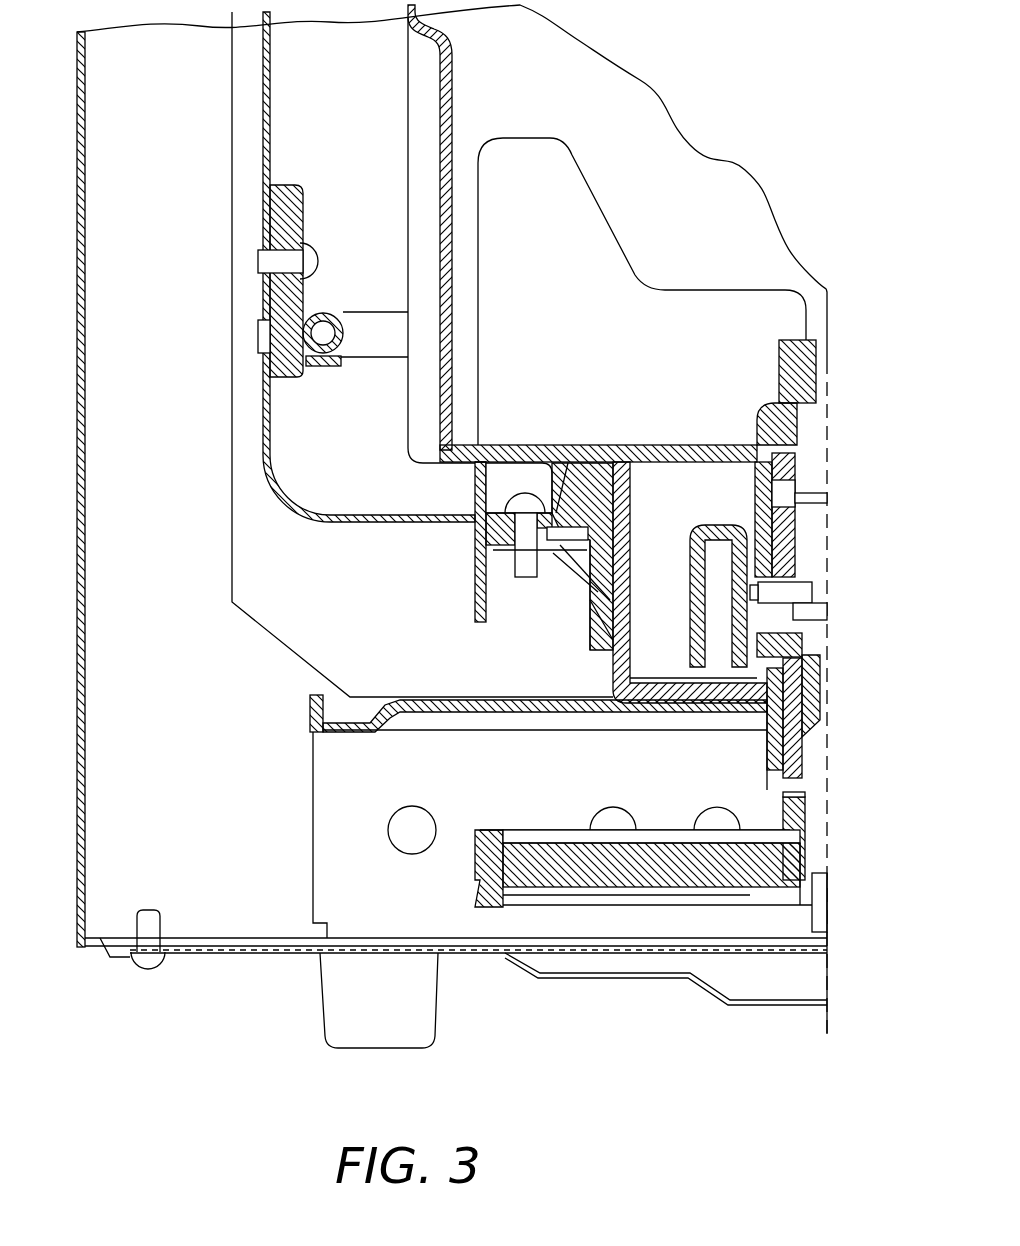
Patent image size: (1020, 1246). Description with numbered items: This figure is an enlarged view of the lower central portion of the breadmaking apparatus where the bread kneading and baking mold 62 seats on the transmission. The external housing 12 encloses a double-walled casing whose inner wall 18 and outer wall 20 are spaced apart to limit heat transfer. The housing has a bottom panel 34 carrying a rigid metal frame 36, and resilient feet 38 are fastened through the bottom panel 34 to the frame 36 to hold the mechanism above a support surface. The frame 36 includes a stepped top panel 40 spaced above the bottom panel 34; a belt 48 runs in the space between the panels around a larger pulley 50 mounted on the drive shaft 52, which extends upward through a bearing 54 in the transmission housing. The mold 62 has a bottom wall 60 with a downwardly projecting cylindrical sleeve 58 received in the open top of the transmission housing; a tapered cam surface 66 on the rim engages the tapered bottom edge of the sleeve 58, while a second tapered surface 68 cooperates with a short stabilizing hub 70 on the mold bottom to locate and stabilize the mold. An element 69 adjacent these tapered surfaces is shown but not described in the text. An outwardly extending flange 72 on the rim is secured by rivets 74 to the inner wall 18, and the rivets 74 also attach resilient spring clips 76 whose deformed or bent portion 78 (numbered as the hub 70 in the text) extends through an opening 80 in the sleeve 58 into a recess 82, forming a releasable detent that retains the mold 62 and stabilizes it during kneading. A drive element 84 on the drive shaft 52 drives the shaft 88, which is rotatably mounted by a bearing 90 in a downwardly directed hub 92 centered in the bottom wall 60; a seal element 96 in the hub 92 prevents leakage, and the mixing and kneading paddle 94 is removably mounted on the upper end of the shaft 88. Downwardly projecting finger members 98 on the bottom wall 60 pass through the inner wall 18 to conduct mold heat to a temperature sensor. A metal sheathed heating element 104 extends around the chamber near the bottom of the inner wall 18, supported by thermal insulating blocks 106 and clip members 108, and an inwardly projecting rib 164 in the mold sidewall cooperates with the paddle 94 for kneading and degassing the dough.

The external housing 12 is at (77, 332).
The inner wall 18 is at (263, 131).
The outer wall 20 is at (232, 217).
The bottom panel 34 is at (562, 985).
The rigid metal frame 36 is at (313, 905).
The resilient feet 38 is at (425, 1008).
The stepped top panel 40 is at (475, 705).
The belt 48 is at (475, 878).
The larger pulley 50 is at (652, 878).
The drive shaft 52 is at (812, 700).
The bearing 54 is at (800, 748).
The cylindrical sleeve 58 is at (625, 525).
The bottom wall 60 is at (490, 445).
The bread kneading and baking mold 62 is at (400, 55).
The cam surface 66 is at (620, 452).
The tapered surface 68 is at (575, 470).
The wedge 69 is at (590, 470).
The stabilizing hub 70 is at (555, 490).
The flange 72 is at (505, 535).
The rivets 74 is at (520, 565).
The spring clips 76 is at (572, 565).
The spring arm 78 is at (643, 612).
The opening 80 is at (606, 635).
The recess 82 is at (640, 592).
The drive element 84 is at (692, 645).
The shaft 88 is at (820, 546).
The bearing 90 is at (790, 563).
The hub 92 is at (805, 365).
The mixing and kneading paddle 94 is at (605, 265).
The seal element 96 is at (800, 470).
The finger members 98 is at (478, 585).
The metal sheathed heating element 104 is at (370, 350).
The thermal insulating blocks 106 is at (270, 370).
The clip members 108 is at (322, 312).
The rib 164 is at (453, 103).